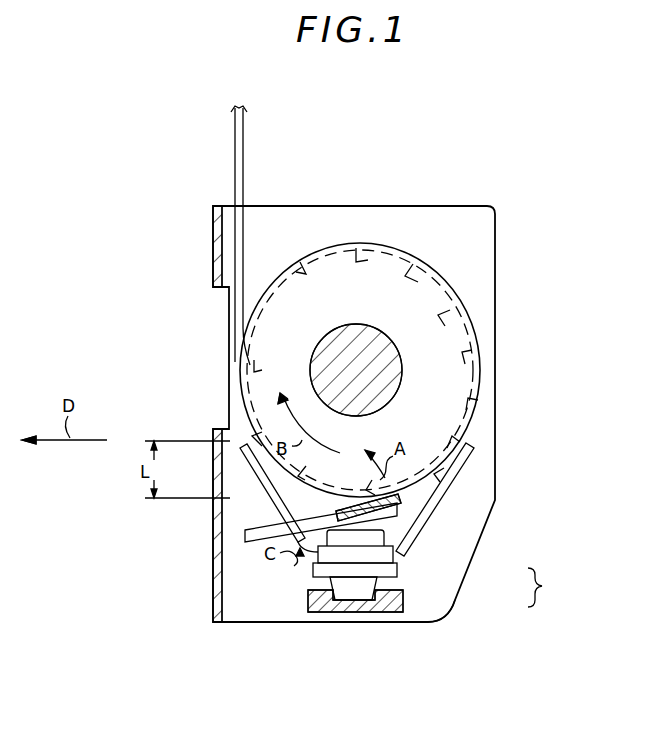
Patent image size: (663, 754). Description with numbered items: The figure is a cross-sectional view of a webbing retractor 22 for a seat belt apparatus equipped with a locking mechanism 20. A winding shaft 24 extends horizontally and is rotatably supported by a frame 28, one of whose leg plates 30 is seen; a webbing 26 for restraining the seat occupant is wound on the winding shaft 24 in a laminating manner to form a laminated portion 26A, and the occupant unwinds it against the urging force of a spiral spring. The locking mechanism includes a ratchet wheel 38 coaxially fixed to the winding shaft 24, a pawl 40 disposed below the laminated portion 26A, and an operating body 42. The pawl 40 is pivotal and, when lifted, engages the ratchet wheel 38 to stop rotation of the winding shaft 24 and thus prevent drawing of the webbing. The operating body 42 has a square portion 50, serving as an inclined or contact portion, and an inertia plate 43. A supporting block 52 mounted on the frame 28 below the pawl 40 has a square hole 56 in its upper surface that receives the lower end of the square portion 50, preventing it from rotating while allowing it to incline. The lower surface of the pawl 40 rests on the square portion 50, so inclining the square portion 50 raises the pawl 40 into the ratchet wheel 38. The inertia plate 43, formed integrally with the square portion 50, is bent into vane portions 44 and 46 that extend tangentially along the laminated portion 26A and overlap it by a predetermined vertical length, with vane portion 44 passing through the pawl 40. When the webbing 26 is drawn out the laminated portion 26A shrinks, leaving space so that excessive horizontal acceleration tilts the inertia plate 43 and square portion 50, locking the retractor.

The locking mechanism 20 is at (415, 596).
The webbing retractor 22 is at (443, 191).
The winding shaft 24 is at (372, 344).
The webbing 26 is at (245, 135).
The laminated portion 26A is at (444, 288).
The frame 28 is at (210, 546).
The leg plate 30 is at (328, 215).
The ratchet wheel 38 is at (478, 322).
The pawl 40 is at (400, 500).
The operating body 42 is at (549, 587).
The inertia plate 43 is at (395, 555).
The vane portion 44 is at (272, 488).
The vane portion 46 is at (460, 470).
The square portion 50 is at (397, 572).
The supporting block 52 is at (386, 612).
The square hole 56 is at (345, 612).